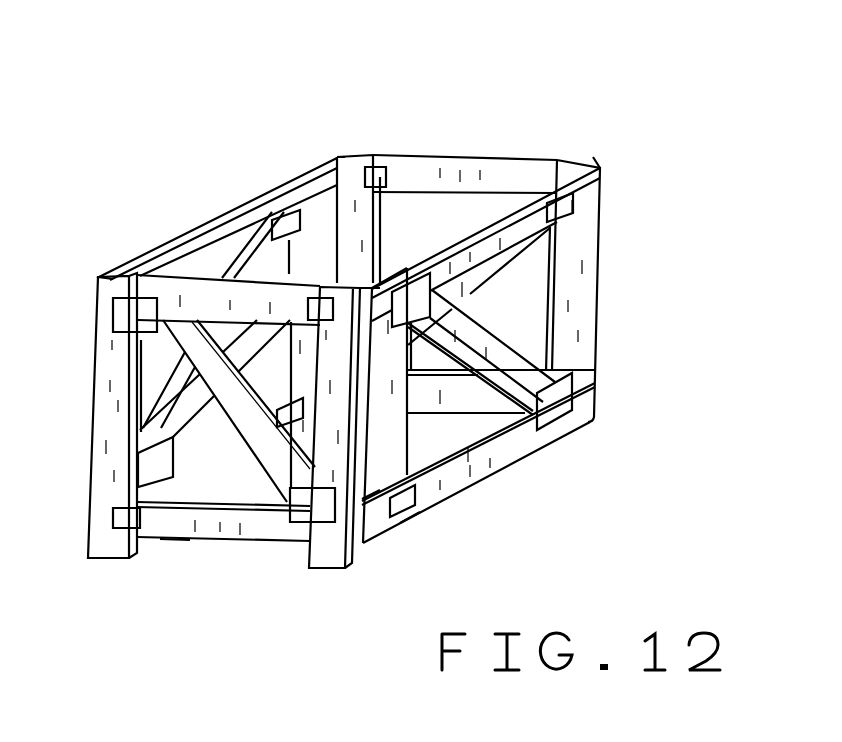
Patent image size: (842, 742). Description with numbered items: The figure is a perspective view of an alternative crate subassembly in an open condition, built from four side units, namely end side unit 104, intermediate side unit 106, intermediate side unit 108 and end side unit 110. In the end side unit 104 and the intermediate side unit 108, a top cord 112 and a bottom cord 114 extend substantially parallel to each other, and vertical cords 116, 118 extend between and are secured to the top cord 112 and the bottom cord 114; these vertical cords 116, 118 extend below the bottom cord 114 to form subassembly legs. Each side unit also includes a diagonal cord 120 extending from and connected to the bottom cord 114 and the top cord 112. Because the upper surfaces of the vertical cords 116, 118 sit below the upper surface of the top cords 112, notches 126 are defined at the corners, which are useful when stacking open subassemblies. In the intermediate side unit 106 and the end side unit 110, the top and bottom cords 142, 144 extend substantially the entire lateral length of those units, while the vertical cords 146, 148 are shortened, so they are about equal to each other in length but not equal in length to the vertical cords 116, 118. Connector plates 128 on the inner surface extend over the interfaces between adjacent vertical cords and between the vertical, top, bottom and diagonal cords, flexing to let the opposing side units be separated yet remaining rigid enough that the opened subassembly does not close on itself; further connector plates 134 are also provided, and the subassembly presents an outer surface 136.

The end side unit 104 is at (168, 545).
The intermediate side unit 106 is at (481, 492).
The intermediate side unit 108 is at (538, 149).
The end side unit 110 is at (175, 232).
The top cord 112 is at (482, 173).
The bottom cord 114 is at (515, 445).
The vertical cord 116 is at (110, 432).
The vertical cord 118 is at (327, 547).
The diagonal cord 120 is at (497, 263).
The notch 126 is at (361, 141).
The connector plate 128 is at (380, 177).
The connector plate 134 is at (575, 205).
The outer surface 136 is at (107, 300).
The top cord 142 is at (229, 232).
The bottom cord 144 is at (490, 448).
The vertical cord 146 is at (428, 432).
The vertical cord 148 is at (585, 261).